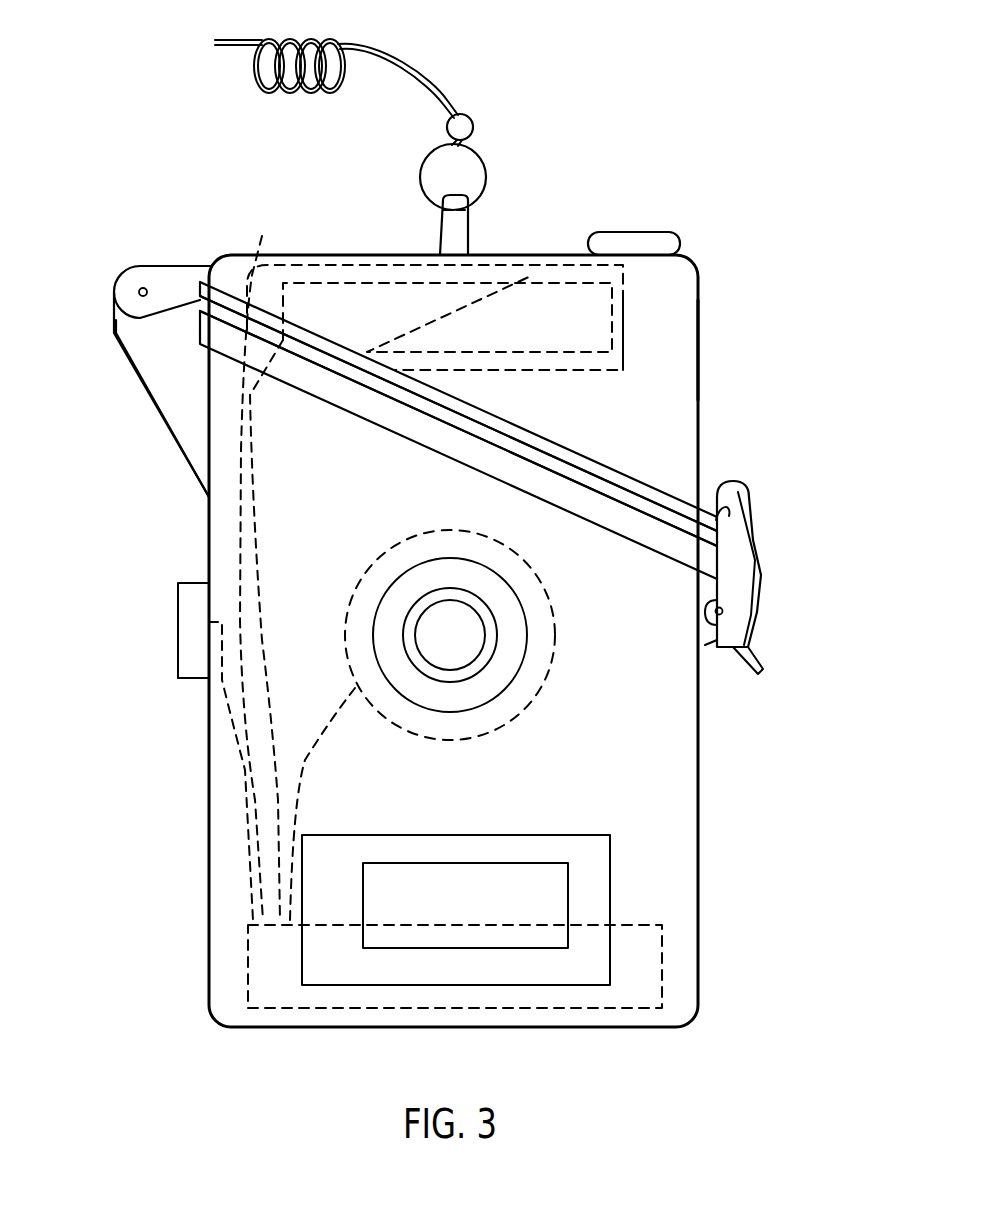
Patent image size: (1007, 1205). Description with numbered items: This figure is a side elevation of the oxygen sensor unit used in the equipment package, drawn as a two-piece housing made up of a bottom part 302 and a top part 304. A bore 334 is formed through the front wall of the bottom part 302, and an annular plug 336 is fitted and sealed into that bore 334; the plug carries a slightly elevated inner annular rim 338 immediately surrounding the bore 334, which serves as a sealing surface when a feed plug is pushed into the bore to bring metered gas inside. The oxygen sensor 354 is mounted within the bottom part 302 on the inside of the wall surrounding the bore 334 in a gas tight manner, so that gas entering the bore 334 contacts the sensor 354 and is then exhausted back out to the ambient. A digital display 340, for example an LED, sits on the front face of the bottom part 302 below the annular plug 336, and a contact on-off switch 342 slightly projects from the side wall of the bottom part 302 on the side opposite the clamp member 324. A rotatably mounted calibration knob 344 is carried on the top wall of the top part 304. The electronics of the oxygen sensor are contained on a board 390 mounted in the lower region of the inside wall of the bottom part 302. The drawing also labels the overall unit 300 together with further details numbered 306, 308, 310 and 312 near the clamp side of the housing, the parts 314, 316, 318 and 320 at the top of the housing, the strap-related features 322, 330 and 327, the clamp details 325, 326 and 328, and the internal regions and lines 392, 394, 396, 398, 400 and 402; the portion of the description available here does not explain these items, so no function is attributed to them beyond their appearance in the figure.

The oxygen monitor 300 is at (182, 845).
The bottom part 302 is at (690, 768).
The top part 304 is at (695, 348).
The clip assembly 306 is at (118, 272).
The clip tab 308 is at (165, 275).
The clip plate 310 is at (160, 362).
The pivot hole 312 is at (137, 292).
The sensor stem 314 is at (462, 232).
The stem junction 316 is at (440, 212).
The sensor ball 318 is at (480, 160).
The cord bead 320 is at (472, 118).
The strap inner band 322 is at (388, 400).
The clamp member 324 is at (772, 546).
The clip lower tab 325 is at (707, 645).
The clip body 326 is at (745, 520).
The strap hook 327 is at (736, 478).
The clip hole 328 is at (725, 610).
The strap 330 is at (465, 405).
The bore 334 is at (468, 625).
The annular plug 336 is at (515, 665).
The inner annular rim 338 is at (425, 665).
The digital display 340 is at (515, 845).
The contact on-off switch 342 is at (178, 640).
The calibration knob 344 is at (628, 240).
The oxygen sensor 354 is at (455, 532).
The board 390 is at (665, 938).
The circuit compartment 392 is at (330, 300).
The compartment wall 394 is at (610, 375).
The wire 396 is at (262, 232).
The wire 398 is at (272, 410).
The button wire 400 is at (230, 693).
The speaker wire 402 is at (318, 788).